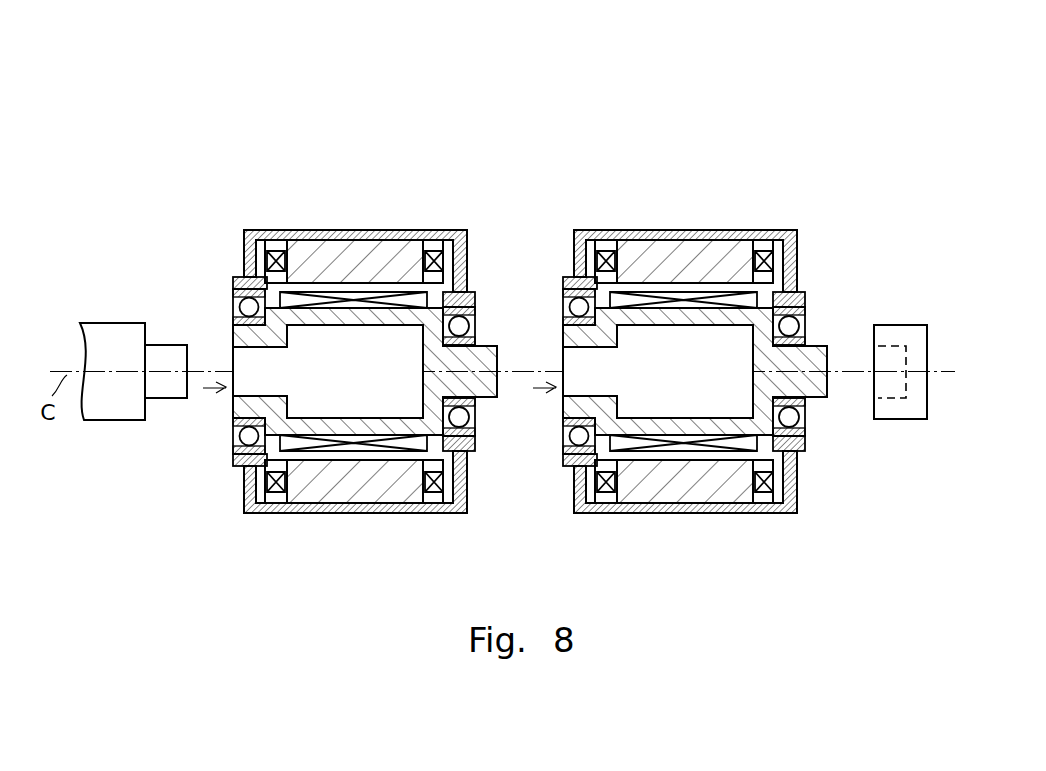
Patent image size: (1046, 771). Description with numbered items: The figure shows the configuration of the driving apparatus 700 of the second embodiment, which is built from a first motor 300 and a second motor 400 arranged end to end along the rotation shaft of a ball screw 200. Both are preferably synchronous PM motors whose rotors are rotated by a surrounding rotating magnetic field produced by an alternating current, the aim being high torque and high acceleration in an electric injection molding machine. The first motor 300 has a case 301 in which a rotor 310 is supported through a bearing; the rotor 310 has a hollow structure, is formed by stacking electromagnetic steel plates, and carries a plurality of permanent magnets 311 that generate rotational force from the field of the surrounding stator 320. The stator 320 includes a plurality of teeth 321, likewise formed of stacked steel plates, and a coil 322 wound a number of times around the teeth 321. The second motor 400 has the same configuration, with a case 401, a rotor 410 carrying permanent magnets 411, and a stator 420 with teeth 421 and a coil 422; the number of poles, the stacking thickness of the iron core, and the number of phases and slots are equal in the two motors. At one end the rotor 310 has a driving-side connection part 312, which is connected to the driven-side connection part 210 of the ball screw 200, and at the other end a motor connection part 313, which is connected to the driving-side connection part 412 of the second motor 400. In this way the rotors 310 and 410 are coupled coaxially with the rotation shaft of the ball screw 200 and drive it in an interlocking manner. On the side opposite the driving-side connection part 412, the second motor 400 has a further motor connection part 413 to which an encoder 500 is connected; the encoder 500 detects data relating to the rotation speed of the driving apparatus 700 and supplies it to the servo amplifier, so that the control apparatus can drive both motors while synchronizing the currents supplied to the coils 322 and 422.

The driving apparatus 700 is at (587, 57).
The first motor 300 is at (407, 127).
The second motor 400 is at (671, 285).
The case 301 is at (422, 230).
The case 401 is at (685, 344).
The rotor 310 is at (266, 297).
The rotor 410 is at (553, 346).
The permanent magnets 311 is at (430, 300).
The permanent magnets 411 is at (731, 354).
The driving-side connection part 312 is at (205, 392).
The driving-side connection part 412 is at (519, 419).
The motor connection part 313 is at (483, 345).
The motor connection part 413 is at (711, 365).
The stator 320 is at (377, 182).
The stator 420 is at (684, 321).
The teeth 321 is at (330, 268).
The teeth 421 is at (685, 342).
The coil 322 is at (276, 251).
The coil 422 is at (685, 337).
The ball screw 200 is at (90, 323).
The driven-side connection part 210 is at (168, 345).
The encoder 500 is at (927, 325).